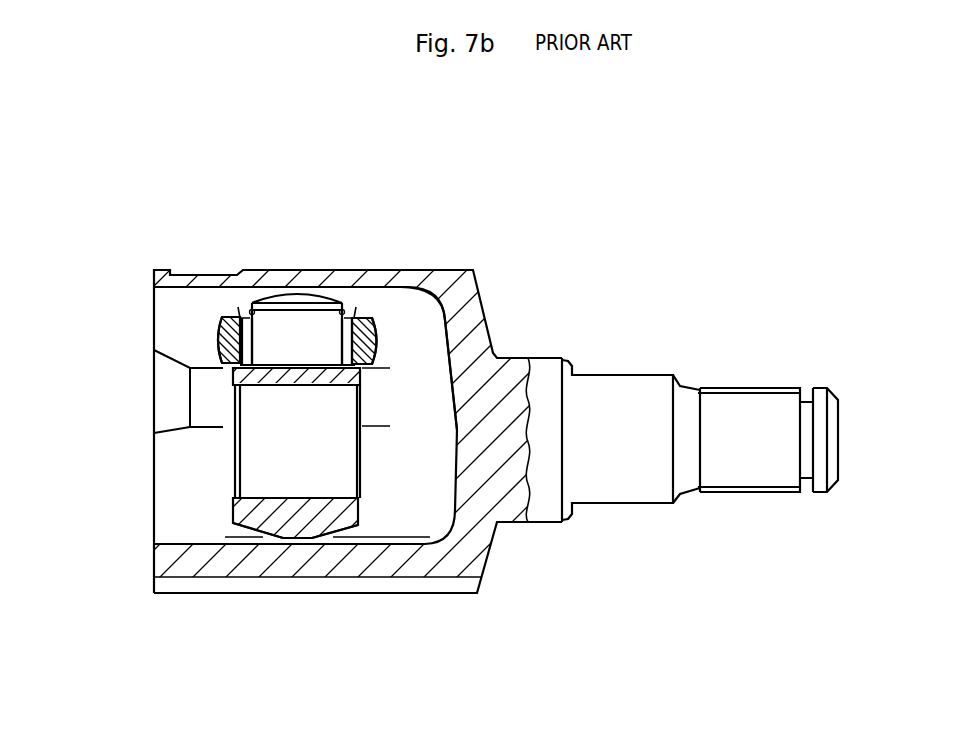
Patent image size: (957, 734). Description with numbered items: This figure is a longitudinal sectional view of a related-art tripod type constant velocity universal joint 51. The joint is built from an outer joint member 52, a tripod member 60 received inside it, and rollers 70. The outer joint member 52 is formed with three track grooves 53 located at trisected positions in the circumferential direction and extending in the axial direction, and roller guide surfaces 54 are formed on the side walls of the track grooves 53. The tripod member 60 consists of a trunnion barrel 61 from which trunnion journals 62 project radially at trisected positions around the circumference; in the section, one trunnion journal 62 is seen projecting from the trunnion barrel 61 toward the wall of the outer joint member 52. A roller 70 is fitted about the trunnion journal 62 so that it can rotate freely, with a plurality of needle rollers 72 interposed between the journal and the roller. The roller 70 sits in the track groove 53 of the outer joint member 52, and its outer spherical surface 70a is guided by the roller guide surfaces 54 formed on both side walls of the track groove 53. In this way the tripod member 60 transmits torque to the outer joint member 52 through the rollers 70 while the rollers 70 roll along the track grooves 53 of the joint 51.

The tripod type constant velocity universal joint 51 is at (475, 252).
The outer joint member 52 is at (432, 270).
The track grooves 53 is at (398, 308).
The roller guide surfaces 54 is at (180, 341).
The tripod member 60 is at (347, 510).
The trunnion barrel 61 is at (293, 518).
The trunnion journals 62 is at (292, 300).
The rollers 70 is at (365, 330).
The outer spherical surface 70a is at (378, 348).
The needle rollers 72 is at (220, 328).